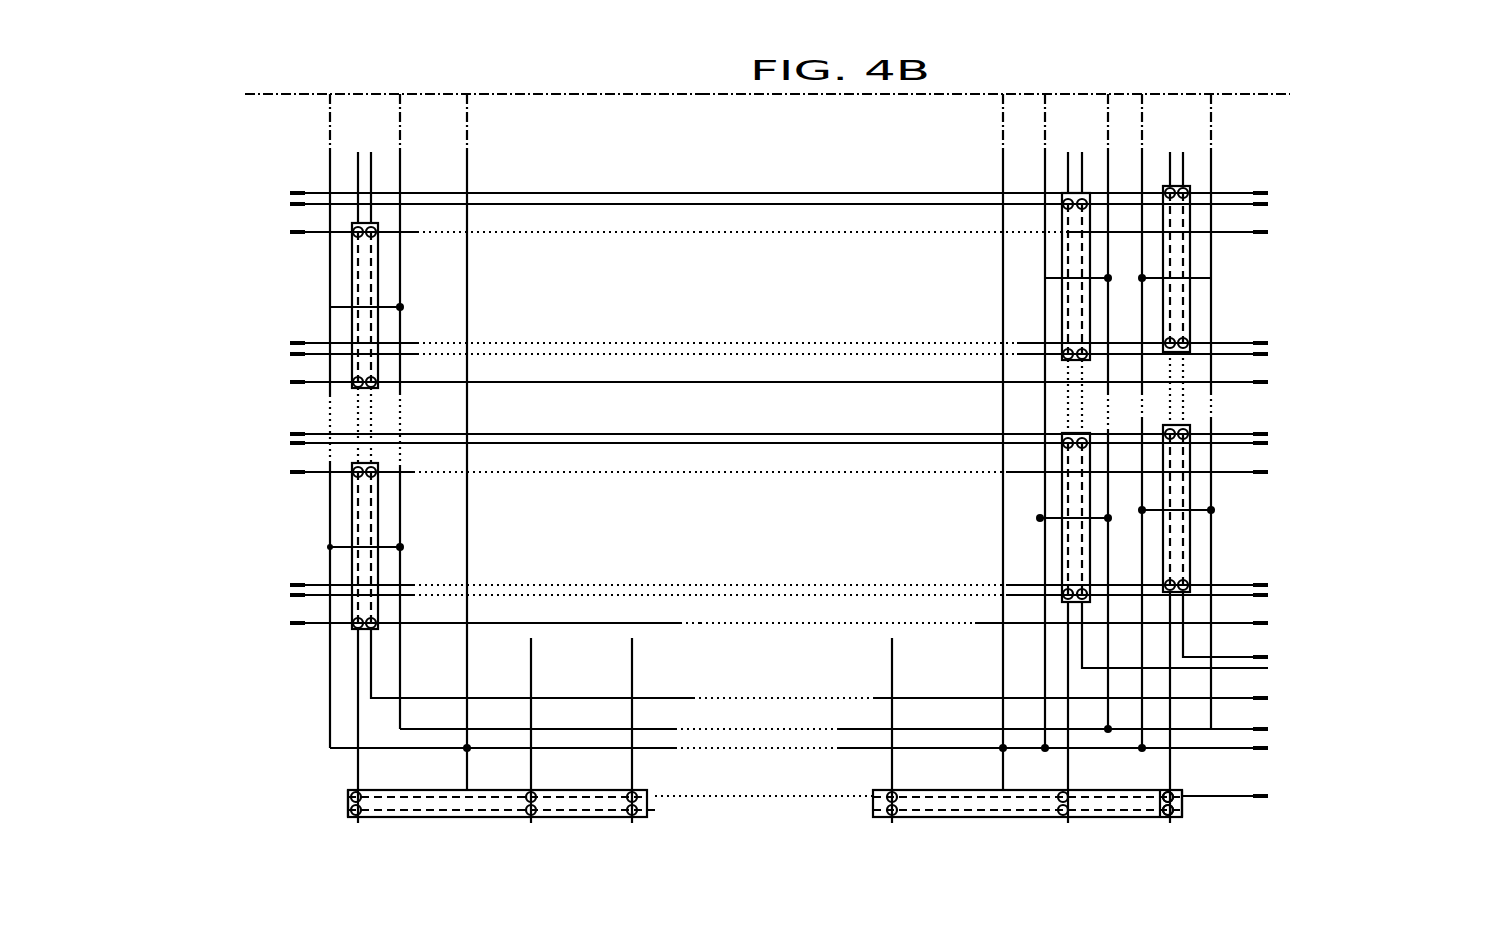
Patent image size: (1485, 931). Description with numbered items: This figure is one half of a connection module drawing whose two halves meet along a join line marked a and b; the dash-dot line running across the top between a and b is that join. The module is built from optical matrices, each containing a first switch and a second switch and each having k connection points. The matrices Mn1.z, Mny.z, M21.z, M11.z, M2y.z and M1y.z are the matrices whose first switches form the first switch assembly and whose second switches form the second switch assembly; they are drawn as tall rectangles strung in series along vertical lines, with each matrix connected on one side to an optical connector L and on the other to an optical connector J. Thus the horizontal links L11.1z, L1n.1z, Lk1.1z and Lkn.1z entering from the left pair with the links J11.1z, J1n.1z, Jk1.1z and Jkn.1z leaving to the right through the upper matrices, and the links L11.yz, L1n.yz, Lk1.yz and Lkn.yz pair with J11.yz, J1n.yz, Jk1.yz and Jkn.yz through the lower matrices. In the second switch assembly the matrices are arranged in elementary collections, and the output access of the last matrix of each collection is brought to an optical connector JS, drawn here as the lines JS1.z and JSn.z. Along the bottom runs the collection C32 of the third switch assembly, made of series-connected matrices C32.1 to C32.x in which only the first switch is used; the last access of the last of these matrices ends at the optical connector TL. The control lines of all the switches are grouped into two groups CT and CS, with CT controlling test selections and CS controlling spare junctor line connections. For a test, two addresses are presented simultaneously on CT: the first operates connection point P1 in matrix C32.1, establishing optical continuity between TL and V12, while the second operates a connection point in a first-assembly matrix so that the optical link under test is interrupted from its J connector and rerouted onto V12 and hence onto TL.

The join line end a is at (472, 78).
The join line end b is at (995, 78).
The optical connector L L11.1z is at (290, 193).
The optical connector L L1n.1z is at (290, 232).
The optical connector L Lk1.1z is at (290, 343).
The optical connector L Lkn.1z is at (290, 382).
The optical connector L L11.yz is at (290, 434).
The optical connector L L1n.yz is at (290, 472).
The optical connector L Lk1.yz is at (290, 585).
The optical connector L Lkn.yz is at (290, 623).
The optical connector J J11.1z is at (1268, 193).
The optical connector J J1n.1z is at (1268, 232).
The optical connector J Jk1.1z is at (1268, 343).
The optical connector J Jkn.1z is at (1268, 382).
The optical connector J J11.yz is at (1268, 434).
The optical connector J J1n.yz is at (1268, 472).
The optical connector J Jk1.yz is at (1268, 585).
The optical connector J Jkn.yz is at (1268, 623).
The optical connector JS JS1.z is at (1268, 657).
The optical connector JS JSn.z is at (1268, 698).
The control lines CS is at (1268, 729).
The control lines CT is at (1268, 748).
The optical connector TL is at (1268, 796).
The optical matrix Mn1.z is at (365, 325).
The optical matrix Mny.z is at (364, 573).
The optical matrix M21.z is at (1072, 303).
The optical matrix M11.z is at (1177, 310).
The optical matrix M2y.z is at (1070, 562).
The optical matrix M1y.z is at (1175, 565).
The collection of optical matrices C32 is at (322, 805).
The optical matrix C32.x is at (455, 817).
The optical matrix C32.1 is at (993, 817).
The optical link V12 is at (1165, 773).
The connection point P1 is at (1178, 789).